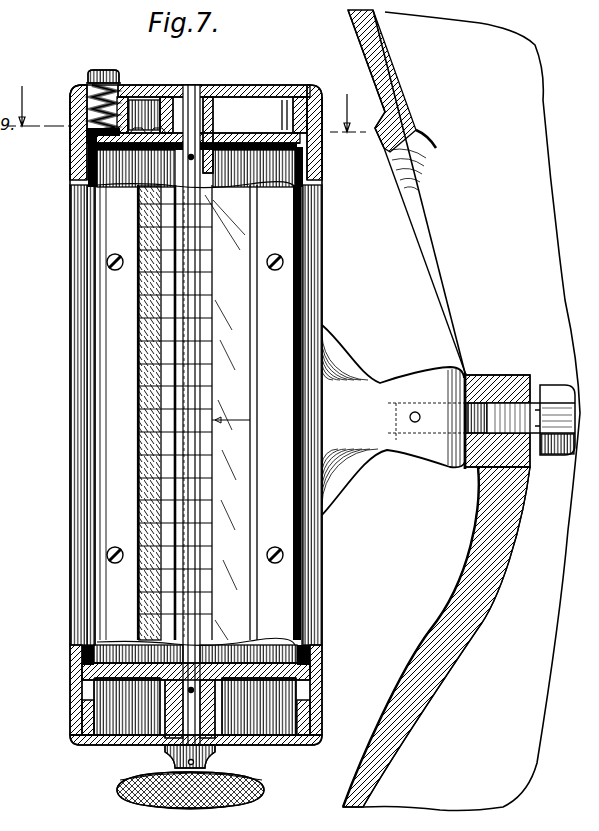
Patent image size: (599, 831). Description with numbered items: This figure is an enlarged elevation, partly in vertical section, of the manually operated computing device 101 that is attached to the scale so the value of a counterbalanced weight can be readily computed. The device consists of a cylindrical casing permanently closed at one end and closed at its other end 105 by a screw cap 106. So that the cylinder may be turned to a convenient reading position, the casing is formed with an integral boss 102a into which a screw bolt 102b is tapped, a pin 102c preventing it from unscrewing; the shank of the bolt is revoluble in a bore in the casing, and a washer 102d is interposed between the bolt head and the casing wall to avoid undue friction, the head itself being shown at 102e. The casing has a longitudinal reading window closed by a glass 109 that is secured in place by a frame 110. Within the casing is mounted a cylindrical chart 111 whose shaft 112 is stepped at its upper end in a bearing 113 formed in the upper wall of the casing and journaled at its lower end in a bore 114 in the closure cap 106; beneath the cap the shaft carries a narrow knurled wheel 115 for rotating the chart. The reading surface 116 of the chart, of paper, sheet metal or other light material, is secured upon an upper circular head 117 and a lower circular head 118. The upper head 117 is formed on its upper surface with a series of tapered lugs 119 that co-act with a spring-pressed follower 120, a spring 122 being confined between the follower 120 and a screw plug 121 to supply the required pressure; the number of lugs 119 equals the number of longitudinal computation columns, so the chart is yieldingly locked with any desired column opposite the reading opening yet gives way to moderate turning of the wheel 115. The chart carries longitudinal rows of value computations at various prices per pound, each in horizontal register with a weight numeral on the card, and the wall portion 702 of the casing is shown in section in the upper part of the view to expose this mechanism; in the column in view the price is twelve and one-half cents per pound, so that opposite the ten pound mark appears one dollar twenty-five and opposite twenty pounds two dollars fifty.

The computing device 101 is at (96, 356).
The casing end 105 is at (318, 718).
The screw cap 106 is at (83, 745).
The glass 109 is at (142, 490).
The frame 110 is at (322, 305).
The cylindrical chart 111 is at (76, 178).
The shaft 112 is at (212, 104).
The bearing 113 is at (196, 98).
The bore 114 is at (215, 740).
The knurled wheel 115 is at (246, 800).
The reading surface 116 is at (72, 165).
The upper circular head 117 is at (150, 96).
The lower circular head 118 is at (72, 680).
The tapered lugs 119 is at (186, 85).
The spring-pressed follower 120 is at (72, 120).
The screw plug 121 is at (88, 76).
The spring 122 is at (118, 84).
The clamp wall 702 is at (322, 181).
The integral boss 102a is at (372, 380).
The screw bolt 102b is at (504, 372).
The pin 102c is at (414, 424).
The washer 102d is at (532, 450).
The bolt head 102e is at (556, 386).